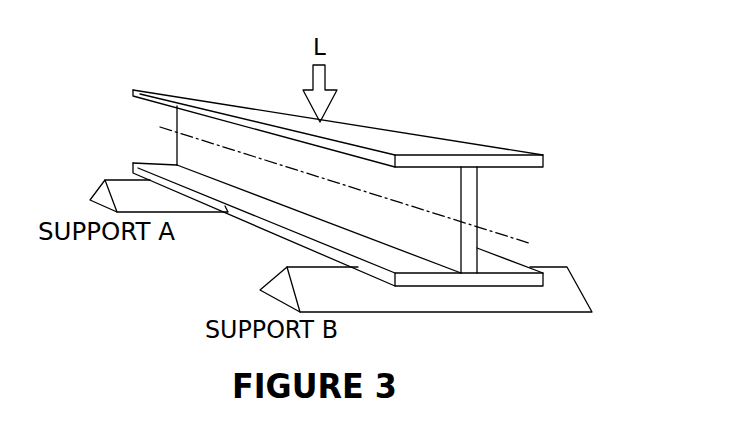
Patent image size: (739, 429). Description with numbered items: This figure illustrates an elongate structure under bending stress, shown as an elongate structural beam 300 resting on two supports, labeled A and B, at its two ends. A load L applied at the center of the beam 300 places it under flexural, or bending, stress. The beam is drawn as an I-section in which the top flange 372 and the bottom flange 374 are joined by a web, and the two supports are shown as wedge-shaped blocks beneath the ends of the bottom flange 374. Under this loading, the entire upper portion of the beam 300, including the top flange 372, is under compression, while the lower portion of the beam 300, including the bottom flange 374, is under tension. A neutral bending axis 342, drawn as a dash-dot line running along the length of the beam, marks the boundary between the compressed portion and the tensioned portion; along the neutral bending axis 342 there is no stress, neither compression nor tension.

The elongate structural beam 300 is at (428, 101).
The top flange 372 is at (441, 157).
The bottom flange 374 is at (500, 280).
The neutral bending axis 342 is at (497, 228).